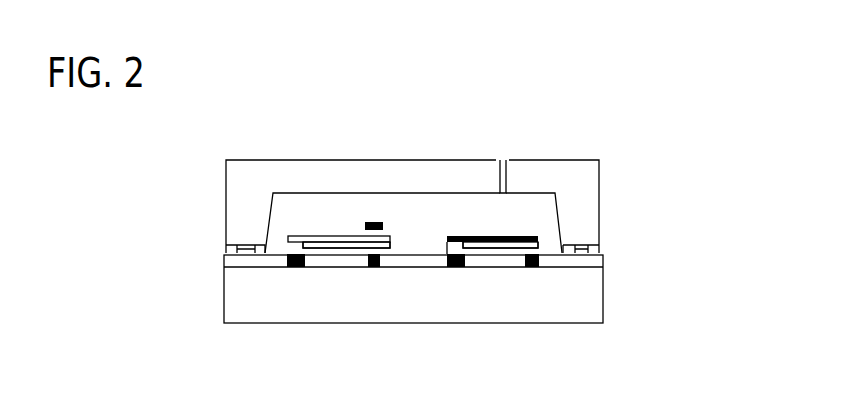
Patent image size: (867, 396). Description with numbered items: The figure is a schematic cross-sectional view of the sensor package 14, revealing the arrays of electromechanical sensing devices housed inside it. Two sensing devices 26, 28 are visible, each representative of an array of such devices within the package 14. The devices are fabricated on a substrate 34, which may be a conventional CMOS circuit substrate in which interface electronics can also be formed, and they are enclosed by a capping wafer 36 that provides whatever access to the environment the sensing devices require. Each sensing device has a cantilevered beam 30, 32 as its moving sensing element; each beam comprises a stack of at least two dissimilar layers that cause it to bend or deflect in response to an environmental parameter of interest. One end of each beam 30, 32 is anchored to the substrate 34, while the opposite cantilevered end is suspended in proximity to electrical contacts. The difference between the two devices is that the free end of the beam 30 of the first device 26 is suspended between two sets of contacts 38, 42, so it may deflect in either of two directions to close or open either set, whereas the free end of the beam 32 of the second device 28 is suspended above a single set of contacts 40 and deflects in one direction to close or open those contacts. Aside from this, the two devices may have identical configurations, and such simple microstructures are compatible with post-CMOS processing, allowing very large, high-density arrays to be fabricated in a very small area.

The sensor package 14 is at (558, 88).
The electromechanical sensing device 26 is at (321, 210).
The electromechanical sensing device 28 is at (476, 210).
The cantilevered beam 30 is at (338, 247).
The cantilevered beam 32 is at (488, 247).
The substrate 34 is at (592, 295).
The capping wafer 36 is at (587, 193).
The set of contacts 38 is at (372, 267).
The set of contacts 40 is at (373, 222).
The set of contacts 42 is at (532, 265).